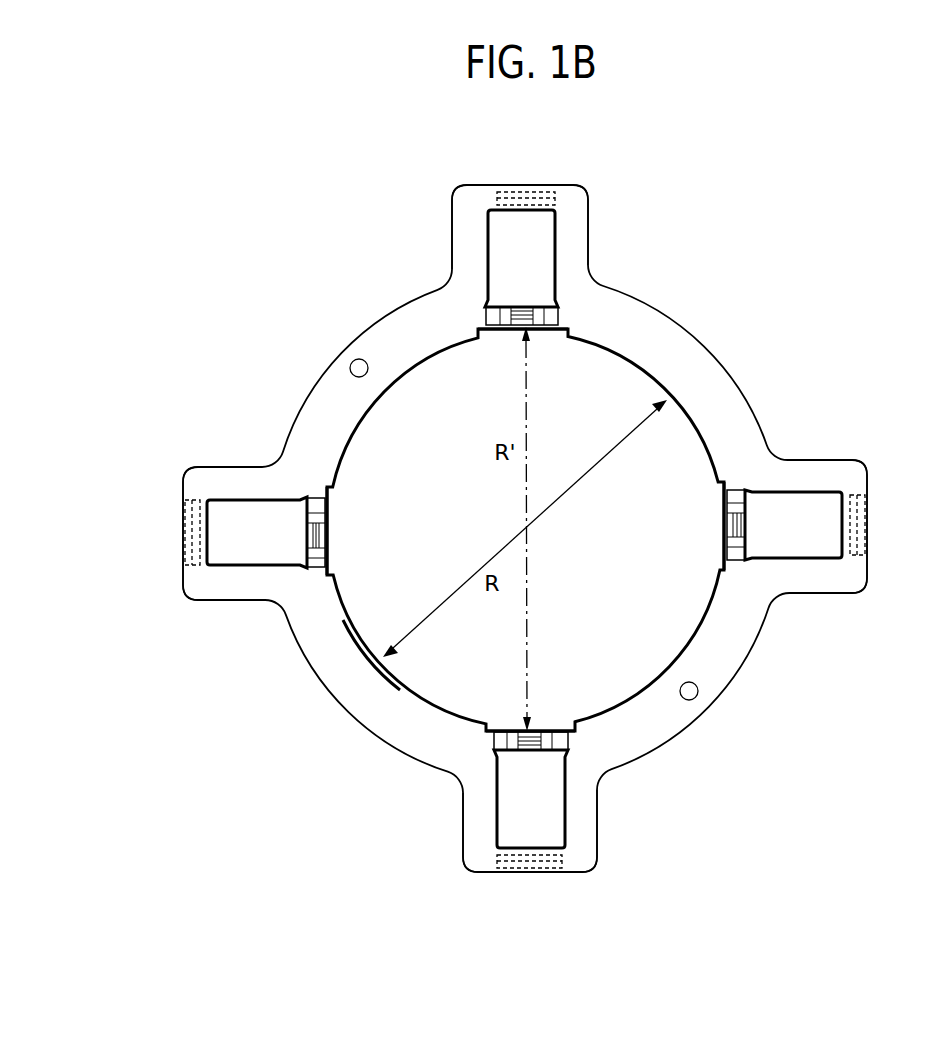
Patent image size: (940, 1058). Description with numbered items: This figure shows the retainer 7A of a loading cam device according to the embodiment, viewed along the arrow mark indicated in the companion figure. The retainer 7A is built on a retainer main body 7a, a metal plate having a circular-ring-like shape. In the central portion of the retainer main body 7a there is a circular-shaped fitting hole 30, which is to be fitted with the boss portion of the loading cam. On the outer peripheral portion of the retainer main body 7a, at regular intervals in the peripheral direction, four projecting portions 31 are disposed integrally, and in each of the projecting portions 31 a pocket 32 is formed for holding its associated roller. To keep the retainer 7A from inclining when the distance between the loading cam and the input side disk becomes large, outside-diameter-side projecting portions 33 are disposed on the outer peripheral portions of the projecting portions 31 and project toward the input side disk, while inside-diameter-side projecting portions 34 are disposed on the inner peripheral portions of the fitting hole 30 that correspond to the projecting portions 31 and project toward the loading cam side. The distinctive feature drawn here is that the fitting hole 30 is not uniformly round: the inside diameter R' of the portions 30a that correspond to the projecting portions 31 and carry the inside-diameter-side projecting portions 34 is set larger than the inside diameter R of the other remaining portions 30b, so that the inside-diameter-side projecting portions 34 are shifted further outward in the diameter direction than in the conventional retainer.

The retainer 7A is at (671, 280).
The retainer main body 7a is at (718, 386).
The fitting hole 30 is at (641, 671).
The portions of the fitting hole corresponding to the projecting portions 30a is at (494, 336).
The remaining portions of the fitting hole 30b is at (372, 632).
The projecting portions 31 is at (463, 233).
The pockets 32 is at (543, 240).
The outside-diameter-side projecting portions 33 is at (575, 187).
The inside-diameter-side projecting portions 34 is at (552, 332).